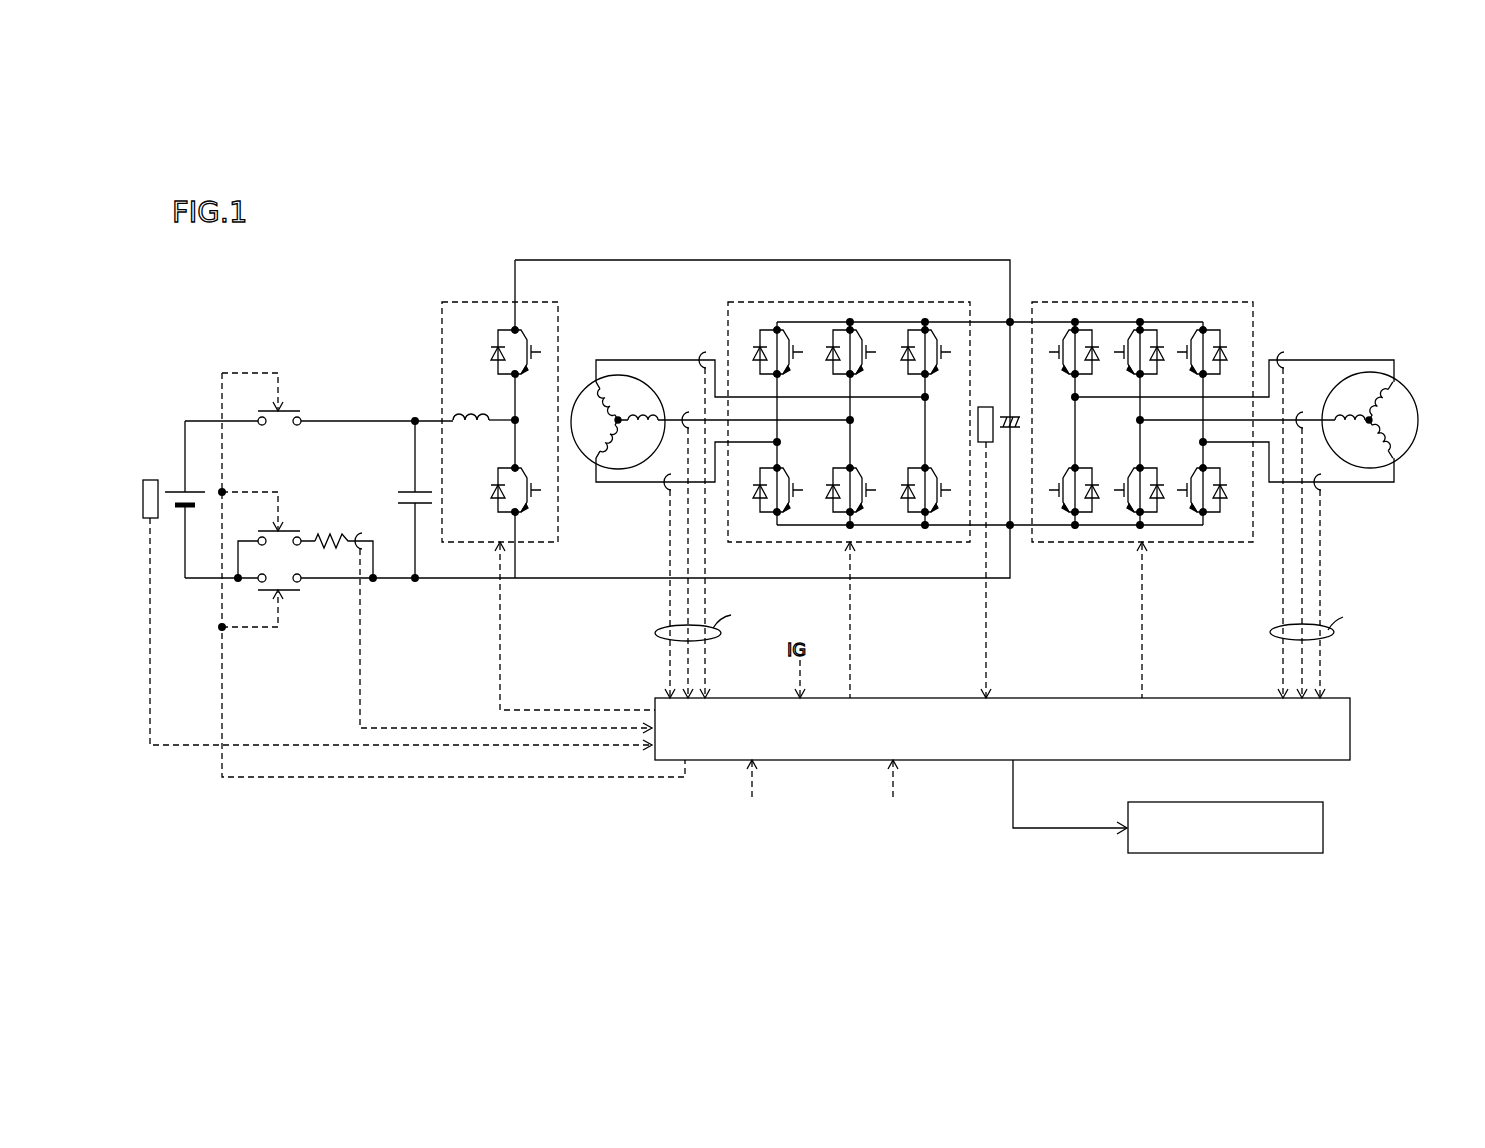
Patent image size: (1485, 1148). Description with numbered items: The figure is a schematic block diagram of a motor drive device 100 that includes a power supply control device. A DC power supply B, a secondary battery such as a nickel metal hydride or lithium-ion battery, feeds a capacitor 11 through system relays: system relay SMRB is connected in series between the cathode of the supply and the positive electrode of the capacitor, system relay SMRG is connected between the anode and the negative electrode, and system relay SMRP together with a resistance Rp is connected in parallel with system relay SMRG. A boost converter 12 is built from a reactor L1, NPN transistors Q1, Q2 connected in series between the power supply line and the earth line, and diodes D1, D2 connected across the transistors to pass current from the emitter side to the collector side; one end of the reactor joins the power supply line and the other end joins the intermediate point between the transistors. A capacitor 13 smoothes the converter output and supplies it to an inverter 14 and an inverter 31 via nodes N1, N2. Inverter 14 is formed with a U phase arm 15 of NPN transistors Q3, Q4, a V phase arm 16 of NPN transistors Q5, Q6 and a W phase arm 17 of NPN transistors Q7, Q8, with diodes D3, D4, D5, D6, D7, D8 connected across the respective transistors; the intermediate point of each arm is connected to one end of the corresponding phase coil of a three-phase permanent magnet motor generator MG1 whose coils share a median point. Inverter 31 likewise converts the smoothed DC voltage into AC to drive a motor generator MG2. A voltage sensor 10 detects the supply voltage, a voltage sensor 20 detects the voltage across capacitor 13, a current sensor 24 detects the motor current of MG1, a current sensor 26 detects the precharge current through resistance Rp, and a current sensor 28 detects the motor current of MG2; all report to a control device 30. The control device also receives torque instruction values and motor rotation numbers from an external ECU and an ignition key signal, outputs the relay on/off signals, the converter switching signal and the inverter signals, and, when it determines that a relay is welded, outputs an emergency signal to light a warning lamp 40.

The motor drive device 100 is at (800, 188).
The voltage sensor 10 is at (150, 479).
The capacitor 11 is at (408, 490).
The boost converter 12 is at (460, 302).
The capacitor 13 is at (1019, 428).
The inverter 14 is at (852, 302).
The U phase arm 15 is at (809, 446).
The V phase arm 16 is at (884, 424).
The W phase arm 17 is at (957, 402).
The voltage sensor 20 is at (986, 405).
The current sensor 24 is at (704, 352).
The current sensor 26 is at (363, 540).
The current sensor 28 is at (1286, 352).
The control device 30 is at (1352, 722).
The inverter 31 is at (1148, 302).
The warning lamp 40 is at (1278, 802).
The DC power supply B is at (198, 490).
The reactor L1 is at (465, 404).
The motor generator MG1 is at (596, 378).
The motor generator MG2 is at (1408, 385).
The system relay SMRB is at (298, 408).
The system relay SMRP is at (297, 528).
The system relay SMRG is at (297, 593).
The resistance Rp is at (332, 532).
The NPN transistor Q1 is at (522, 350).
The NPN transistor Q2 is at (522, 488).
The NPN transistor Q3 is at (782, 350).
The NPN transistor Q4 is at (782, 488).
The NPN transistor Q5 is at (855, 350).
The NPN transistor Q6 is at (855, 488).
The NPN transistor Q7 is at (930, 350).
The NPN transistor Q8 is at (930, 488).
The diode D1 is at (479, 334).
The diode D2 is at (479, 472).
The diode D3 is at (746, 377).
The diode D4 is at (746, 514).
The diode D5 is at (819, 377).
The diode D6 is at (819, 514).
The diode D7 is at (893, 377).
The diode D8 is at (893, 514).
The node N1 is at (1008, 320).
The node N2 is at (1012, 528).